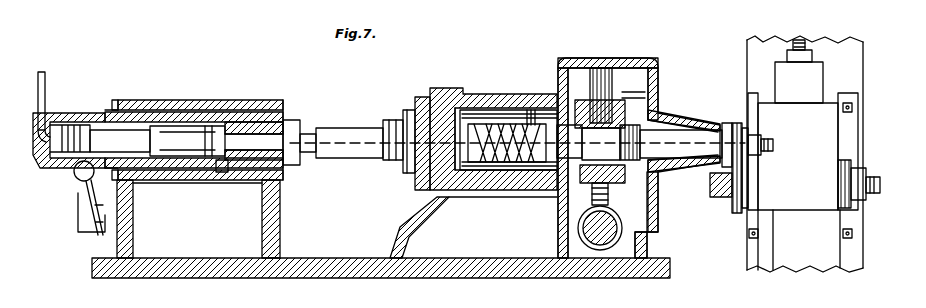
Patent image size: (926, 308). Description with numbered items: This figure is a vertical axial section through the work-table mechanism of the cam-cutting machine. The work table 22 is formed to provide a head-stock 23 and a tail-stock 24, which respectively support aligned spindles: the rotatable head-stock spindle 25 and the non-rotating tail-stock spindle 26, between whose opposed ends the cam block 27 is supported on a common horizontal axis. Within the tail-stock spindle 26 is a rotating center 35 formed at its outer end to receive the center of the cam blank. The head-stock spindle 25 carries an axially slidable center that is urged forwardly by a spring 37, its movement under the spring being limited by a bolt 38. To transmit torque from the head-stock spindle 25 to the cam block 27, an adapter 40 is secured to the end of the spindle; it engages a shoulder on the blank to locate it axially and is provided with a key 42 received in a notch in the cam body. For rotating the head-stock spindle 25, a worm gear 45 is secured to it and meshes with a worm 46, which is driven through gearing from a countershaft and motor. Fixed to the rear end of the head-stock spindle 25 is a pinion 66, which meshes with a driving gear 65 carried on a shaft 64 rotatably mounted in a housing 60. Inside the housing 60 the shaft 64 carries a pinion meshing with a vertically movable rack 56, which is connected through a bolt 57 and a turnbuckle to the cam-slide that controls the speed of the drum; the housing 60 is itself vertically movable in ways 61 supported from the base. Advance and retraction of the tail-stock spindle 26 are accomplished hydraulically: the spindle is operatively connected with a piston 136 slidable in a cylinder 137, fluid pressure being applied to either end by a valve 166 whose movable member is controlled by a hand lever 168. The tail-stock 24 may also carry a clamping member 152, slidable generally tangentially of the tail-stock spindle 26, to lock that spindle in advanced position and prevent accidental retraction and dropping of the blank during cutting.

The work table 22 is at (297, 262).
The head-stock 23 is at (487, 102).
The tail-stock 24 is at (200, 100).
The head-stock spindle 25 is at (503, 163).
The tail-stock spindle 26 is at (212, 160).
The cam block 27 is at (362, 150).
The rotating center 35 is at (247, 135).
The spring 37 is at (522, 168).
The bolt 38 is at (531, 110).
The adapter 40 is at (398, 176).
The key 42 is at (383, 123).
The worm gear 45 is at (602, 72).
The worm 46 is at (583, 227).
The rack 56 is at (802, 85).
The bolt 57 is at (807, 43).
The housing 60 is at (814, 151).
The ways 61 is at (850, 223).
The shaft 64 is at (745, 185).
The driving gear 65 is at (740, 213).
The pinion 66 is at (737, 123).
The piston 136 is at (100, 117).
The cylinder 137 is at (58, 122).
The clamping member 152 is at (222, 172).
The valve 166 is at (78, 196).
The hand lever 168 is at (95, 198).